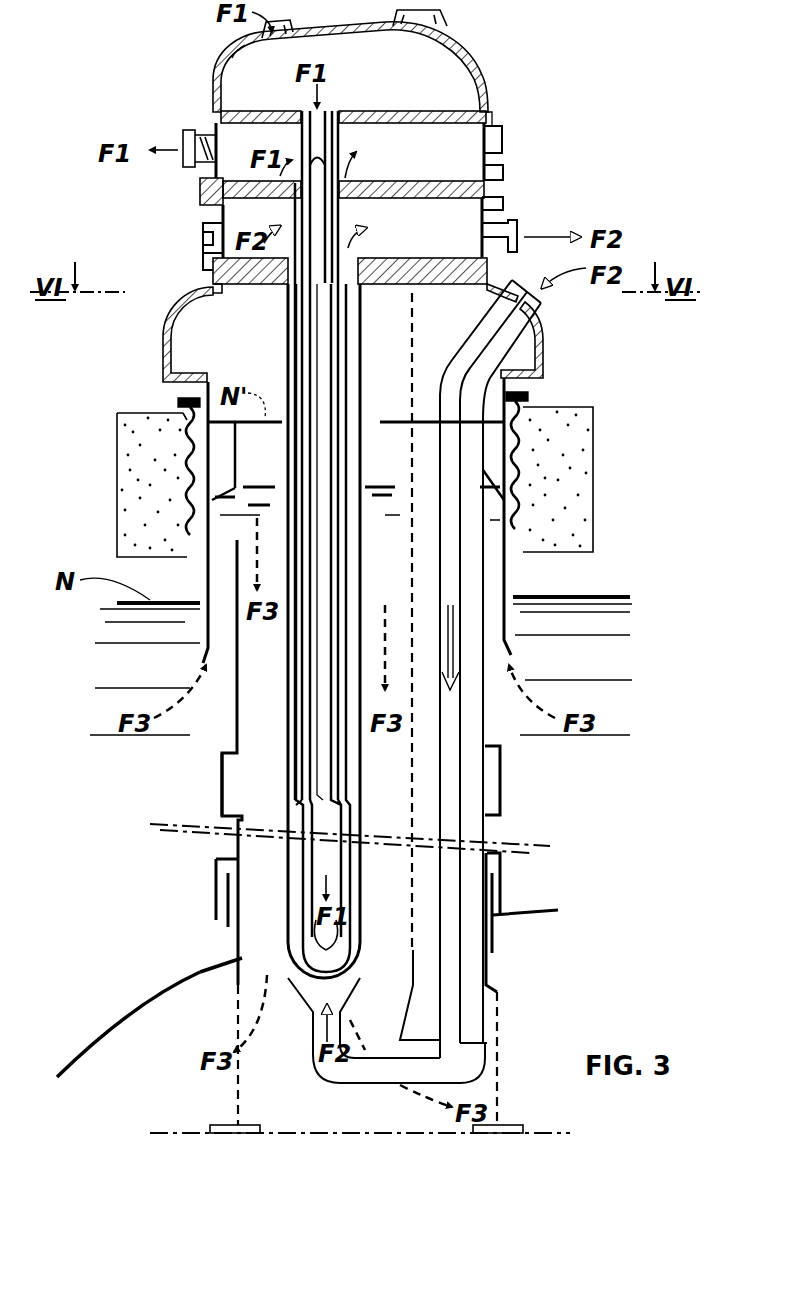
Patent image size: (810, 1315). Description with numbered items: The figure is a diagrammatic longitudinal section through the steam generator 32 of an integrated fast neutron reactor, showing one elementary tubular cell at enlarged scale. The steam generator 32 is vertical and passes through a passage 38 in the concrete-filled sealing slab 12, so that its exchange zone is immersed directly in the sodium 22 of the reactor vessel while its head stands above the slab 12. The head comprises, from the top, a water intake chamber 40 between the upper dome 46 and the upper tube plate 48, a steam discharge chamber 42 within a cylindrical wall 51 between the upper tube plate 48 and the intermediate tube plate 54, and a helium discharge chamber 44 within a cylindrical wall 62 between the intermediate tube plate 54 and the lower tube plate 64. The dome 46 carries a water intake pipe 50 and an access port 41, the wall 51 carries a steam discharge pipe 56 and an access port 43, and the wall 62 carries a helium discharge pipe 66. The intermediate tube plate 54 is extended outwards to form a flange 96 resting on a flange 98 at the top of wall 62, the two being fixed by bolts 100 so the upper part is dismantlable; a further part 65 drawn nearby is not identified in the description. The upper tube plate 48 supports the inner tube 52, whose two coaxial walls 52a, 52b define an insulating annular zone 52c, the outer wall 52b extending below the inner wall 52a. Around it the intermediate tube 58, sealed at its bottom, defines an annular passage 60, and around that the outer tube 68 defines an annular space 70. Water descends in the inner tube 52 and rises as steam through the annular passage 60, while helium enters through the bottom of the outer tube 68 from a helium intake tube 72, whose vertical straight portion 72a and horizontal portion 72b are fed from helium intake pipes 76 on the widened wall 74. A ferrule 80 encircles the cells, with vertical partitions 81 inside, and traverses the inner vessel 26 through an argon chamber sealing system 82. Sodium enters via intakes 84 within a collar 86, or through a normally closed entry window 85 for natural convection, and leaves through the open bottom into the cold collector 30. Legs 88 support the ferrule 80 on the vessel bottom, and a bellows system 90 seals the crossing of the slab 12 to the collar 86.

The sealing slab 12 is at (548, 470).
The liquid metal 22 is at (86, 688).
The inner vessel 26 is at (76, 1068).
The cold collector 30 is at (169, 1111).
The steam generator 32 is at (210, 860).
The passage 38 is at (180, 508).
The water intake chamber 40 is at (353, 60).
The access port 41 is at (420, 30).
The steam discharge chamber 42 is at (446, 167).
The access port 43 is at (502, 138).
The helium discharge chamber 44 is at (446, 247).
The upper dome 46 is at (470, 55).
The upper tube plate 48 is at (380, 115).
The water intake pipe 50 is at (232, 65).
The cylindrical wall 51 is at (490, 128).
The inner tube 52 is at (340, 400).
The inner wall 52a is at (306, 808).
The outer wall 52b is at (344, 898).
The annular zone 52c is at (338, 800).
The intermediate tube plate 54 is at (205, 190).
The steam discharge pipe 56 is at (188, 132).
The intermediate tube 58 is at (352, 470).
The annular passage 60 is at (347, 332).
The cylindrical wall 62 is at (216, 270).
The lower tube plate 64 is at (260, 286).
The seal block 65 is at (203, 262).
The discharge pipe 66 is at (465, 285).
The outer tube 68 is at (404, 551).
The annular space 70 is at (286, 345).
The helium intake tube 72 is at (468, 828).
The vertical straight portion 72a is at (444, 550).
The horizontal portion 72b is at (366, 1072).
The widened wall 74 is at (168, 342).
The helium intake pipe 76 is at (545, 322).
The ferrule 80 is at (236, 838).
The vertical partition 81 is at (430, 988).
The argon chamber sealing system 82 is at (500, 860).
The intake 84 is at (243, 512).
The entry window 85 is at (222, 772).
The collar 86 is at (510, 638).
The legs 88 is at (232, 1026).
The bellows system 90 is at (192, 428).
The flange 96 is at (500, 175).
The flange 98 is at (500, 205).
The bolt 100 is at (204, 230).